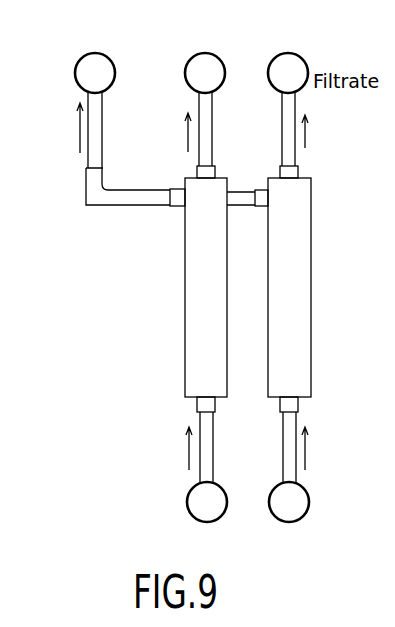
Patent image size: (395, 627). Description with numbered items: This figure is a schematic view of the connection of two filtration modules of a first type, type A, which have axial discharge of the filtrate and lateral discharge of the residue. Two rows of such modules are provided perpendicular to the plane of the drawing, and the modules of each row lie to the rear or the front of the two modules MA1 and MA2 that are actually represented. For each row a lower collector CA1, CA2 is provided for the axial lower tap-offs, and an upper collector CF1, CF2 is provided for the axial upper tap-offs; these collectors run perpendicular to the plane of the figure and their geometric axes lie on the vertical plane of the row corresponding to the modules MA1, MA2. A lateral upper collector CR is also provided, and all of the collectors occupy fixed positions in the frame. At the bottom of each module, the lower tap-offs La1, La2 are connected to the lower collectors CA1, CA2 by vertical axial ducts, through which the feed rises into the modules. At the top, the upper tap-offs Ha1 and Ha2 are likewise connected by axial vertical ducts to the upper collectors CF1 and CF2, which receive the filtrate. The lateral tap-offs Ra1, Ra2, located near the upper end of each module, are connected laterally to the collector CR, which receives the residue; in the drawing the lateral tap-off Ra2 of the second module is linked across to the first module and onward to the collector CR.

The lateral upper collector CR is at (86, 62).
The upper collector CF1 is at (203, 63).
The upper collector CF2 is at (288, 63).
The upper tap-off Ha1 is at (200, 172).
The upper tap-off Ha2 is at (291, 172).
The lateral tap-off Ra1 is at (178, 198).
The lateral tap-off Ra2 is at (260, 195).
The module MA1 is at (200, 284).
The module MA2 is at (292, 300).
The lower tap-off La1 is at (200, 405).
The lower tap-off La2 is at (298, 405).
The lower collector CA1 is at (190, 505).
The lower collector CA2 is at (310, 506).